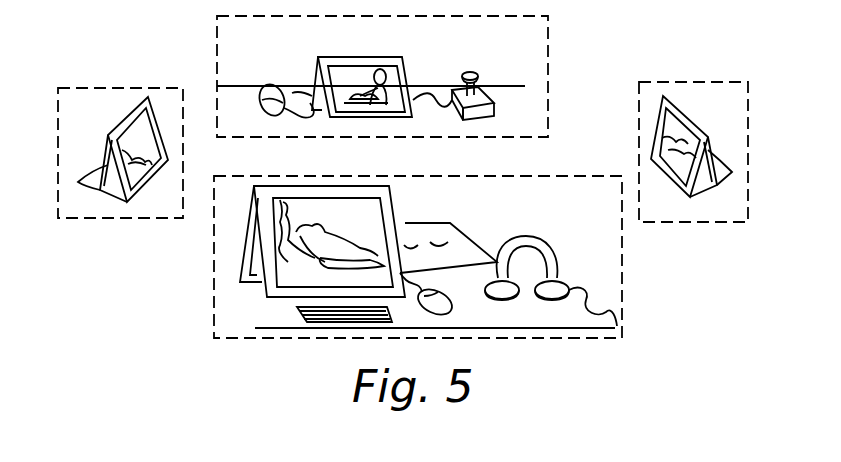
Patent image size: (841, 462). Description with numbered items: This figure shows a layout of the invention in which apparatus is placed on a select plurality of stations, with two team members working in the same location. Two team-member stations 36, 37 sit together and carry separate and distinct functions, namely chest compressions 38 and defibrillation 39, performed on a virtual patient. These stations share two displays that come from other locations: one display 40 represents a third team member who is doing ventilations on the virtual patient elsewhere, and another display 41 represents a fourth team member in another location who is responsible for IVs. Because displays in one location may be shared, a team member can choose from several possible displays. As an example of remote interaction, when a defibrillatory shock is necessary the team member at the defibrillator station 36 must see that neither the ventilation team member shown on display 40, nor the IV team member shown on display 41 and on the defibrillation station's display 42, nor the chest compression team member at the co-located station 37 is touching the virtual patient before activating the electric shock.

The team-member station 36 is at (622, 268).
The team-member station 37 is at (548, 50).
The chest compressions 38 is at (478, 76).
The defibrillation 39 is at (470, 237).
The display 40 is at (100, 88).
The display 41 is at (706, 82).
The defibrillation station's display 42 is at (368, 213).